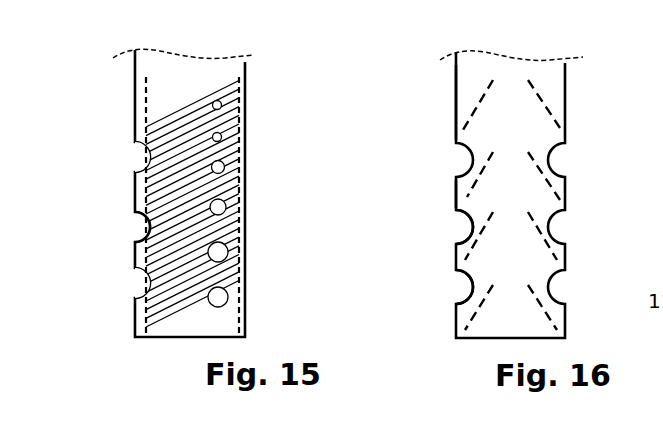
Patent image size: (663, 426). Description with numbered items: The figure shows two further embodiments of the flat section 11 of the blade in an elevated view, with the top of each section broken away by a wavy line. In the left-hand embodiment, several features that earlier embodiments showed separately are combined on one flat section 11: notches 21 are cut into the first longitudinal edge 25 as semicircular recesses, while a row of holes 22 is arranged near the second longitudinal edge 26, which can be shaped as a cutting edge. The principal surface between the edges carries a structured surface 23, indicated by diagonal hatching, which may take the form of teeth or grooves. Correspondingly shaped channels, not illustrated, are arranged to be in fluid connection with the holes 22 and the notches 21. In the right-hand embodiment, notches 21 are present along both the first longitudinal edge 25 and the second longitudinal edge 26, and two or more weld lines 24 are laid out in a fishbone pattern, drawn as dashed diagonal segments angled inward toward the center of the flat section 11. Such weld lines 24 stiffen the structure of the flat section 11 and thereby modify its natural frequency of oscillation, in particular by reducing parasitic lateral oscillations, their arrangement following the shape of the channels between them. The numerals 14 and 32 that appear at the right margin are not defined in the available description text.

In FIG. 15, the flat section 11 is at (88, 51).
In FIG. 16, the housing 14 is at (644, 68).
In FIG. 15, the notches 21 is at (140, 228).
In FIG. 16, the notches 21 is at (462, 225).
In FIG. 15, the holes 22 is at (227, 207).
In FIG. 15, the structured surfaces 23 is at (180, 193).
In FIG. 16, the weld lines 24 is at (457, 195).
In FIG. 15, the first longitudinal edge 25 is at (135, 132).
In FIG. 16, the first longitudinal edge 25 is at (456, 127).
In FIG. 15, the second longitudinal edge 26 is at (247, 128).
In FIG. 16, the connector 32 is at (662, 143).